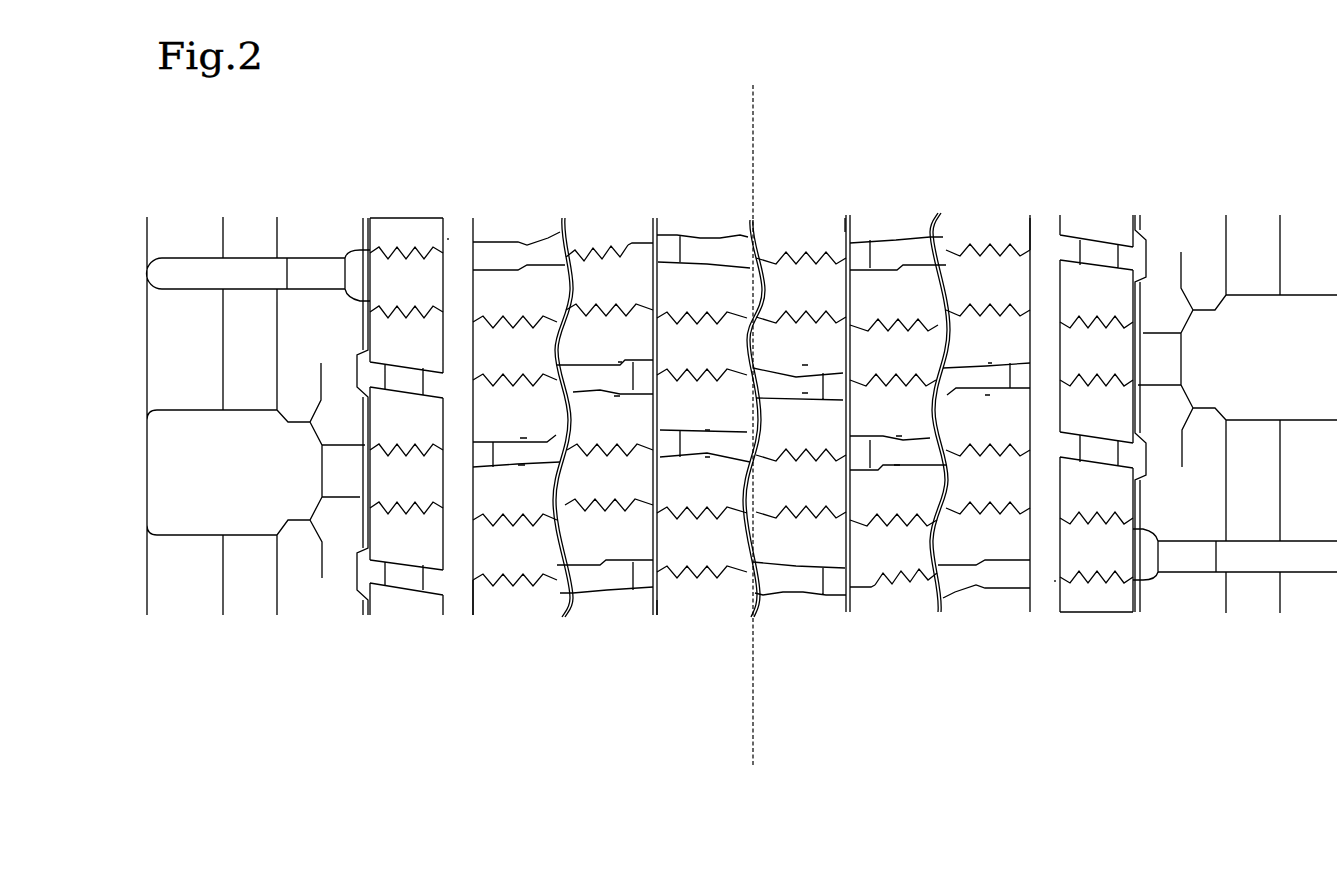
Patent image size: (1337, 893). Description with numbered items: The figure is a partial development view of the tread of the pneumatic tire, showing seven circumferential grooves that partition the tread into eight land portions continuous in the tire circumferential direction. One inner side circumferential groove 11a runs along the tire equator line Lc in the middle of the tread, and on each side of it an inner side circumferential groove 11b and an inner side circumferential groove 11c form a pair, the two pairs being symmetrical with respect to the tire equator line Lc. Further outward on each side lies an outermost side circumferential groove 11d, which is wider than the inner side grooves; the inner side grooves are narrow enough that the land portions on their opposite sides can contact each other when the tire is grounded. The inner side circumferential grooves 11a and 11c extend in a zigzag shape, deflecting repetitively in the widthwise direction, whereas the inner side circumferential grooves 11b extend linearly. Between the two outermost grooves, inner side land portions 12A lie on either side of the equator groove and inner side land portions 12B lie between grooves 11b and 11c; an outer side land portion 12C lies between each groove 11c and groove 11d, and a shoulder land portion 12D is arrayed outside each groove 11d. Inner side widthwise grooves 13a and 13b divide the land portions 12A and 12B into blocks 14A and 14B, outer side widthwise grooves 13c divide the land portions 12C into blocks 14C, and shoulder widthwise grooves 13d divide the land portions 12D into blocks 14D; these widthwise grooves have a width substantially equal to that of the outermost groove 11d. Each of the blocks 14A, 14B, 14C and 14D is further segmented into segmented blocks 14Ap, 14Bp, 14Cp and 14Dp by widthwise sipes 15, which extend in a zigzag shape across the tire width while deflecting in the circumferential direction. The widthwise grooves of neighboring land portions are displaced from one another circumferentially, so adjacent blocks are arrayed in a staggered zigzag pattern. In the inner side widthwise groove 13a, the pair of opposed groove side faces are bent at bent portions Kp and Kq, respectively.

The inner side land portion 12A is at (690, 215).
The inner side land portion 12B is at (597, 215).
The outer side land portion 12C is at (523, 215).
The shoulder land portion 12D is at (419, 215).
The inner side circumferential groove 11a is at (751, 228).
The inner side circumferential groove 11b is at (656, 229).
The inner side circumferential groove 11c is at (565, 216).
The outermost side circumferential groove 11d is at (457, 238).
The widthwise sipe 15 is at (390, 307).
The inner side widthwise groove 13a is at (722, 583).
The inner side widthwise groove 13b is at (597, 585).
The outer side widthwise groove 13c is at (523, 588).
The shoulder widthwise groove 13d is at (405, 582).
The segmented block 14Ap is at (685, 540).
The segmented block 14Bp is at (622, 485).
The segmented block 14Cp is at (463, 517).
The segmented block 14Dp is at (357, 497).
The block 14A is at (751, 561).
The block 14B is at (751, 572).
The block 14C is at (749, 558).
The block 14D is at (745, 570).
The bent portion Kp is at (520, 437).
The bent portion Kq is at (518, 465).
The tire equator line Lc is at (752, 412).